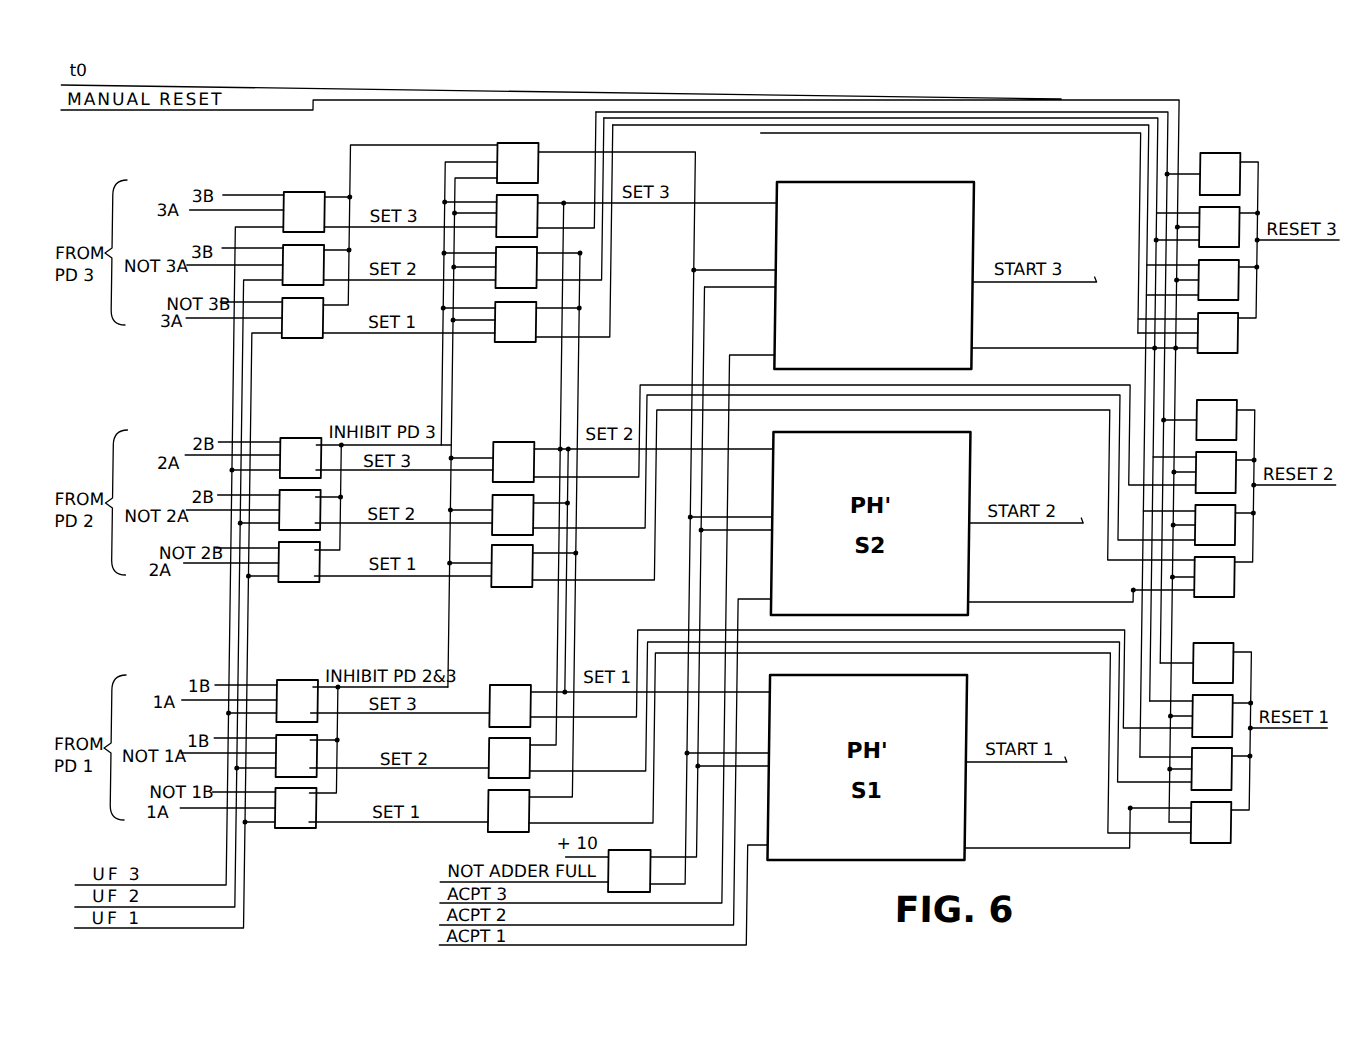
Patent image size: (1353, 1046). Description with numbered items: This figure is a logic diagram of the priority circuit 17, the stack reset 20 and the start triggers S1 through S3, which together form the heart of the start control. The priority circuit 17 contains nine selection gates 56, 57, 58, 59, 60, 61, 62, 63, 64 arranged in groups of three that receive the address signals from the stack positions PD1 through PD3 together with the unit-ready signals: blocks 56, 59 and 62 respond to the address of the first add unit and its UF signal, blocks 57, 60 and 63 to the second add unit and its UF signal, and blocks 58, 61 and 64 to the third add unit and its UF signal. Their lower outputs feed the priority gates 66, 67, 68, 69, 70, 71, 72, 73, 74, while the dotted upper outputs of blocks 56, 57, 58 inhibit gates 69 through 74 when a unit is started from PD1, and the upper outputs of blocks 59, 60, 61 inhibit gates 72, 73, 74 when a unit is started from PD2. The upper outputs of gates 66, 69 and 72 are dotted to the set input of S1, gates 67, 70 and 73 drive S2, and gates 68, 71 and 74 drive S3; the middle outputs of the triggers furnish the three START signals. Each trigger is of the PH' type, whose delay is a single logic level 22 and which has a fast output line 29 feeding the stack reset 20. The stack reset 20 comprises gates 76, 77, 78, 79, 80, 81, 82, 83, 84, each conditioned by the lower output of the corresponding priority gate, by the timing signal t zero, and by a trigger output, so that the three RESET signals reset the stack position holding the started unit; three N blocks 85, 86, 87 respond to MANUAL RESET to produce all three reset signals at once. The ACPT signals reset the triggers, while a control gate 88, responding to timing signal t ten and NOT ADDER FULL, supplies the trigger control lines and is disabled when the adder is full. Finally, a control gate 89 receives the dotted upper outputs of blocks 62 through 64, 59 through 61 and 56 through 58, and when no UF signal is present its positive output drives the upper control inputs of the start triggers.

The priority circuit 17 is at (377, 860).
The stack reset 20 is at (1223, 860).
The logic level 22 is at (888, 185).
The line 29 is at (1035, 350).
The selection gate 56 is at (305, 828).
The selection gate 57 is at (317, 740).
The selection gate 58 is at (300, 680).
The selection gate 59 is at (310, 582).
The selection gate 60 is at (320, 492).
The selection gate 61 is at (305, 438).
The selection gate 62 is at (310, 338).
The selection gate 63 is at (285, 250).
The selection gate 64 is at (320, 193).
The priority gate 66 is at (497, 797).
The priority gate 67 is at (497, 745).
The priority gate 68 is at (503, 685).
The priority gate 69 is at (525, 587).
The priority gate 70 is at (497, 500).
The priority gate 71 is at (510, 442).
The priority gate 72 is at (525, 342).
The priority gate 73 is at (537, 252).
The priority gate 74 is at (537, 200).
The reset gate 76 is at (1230, 825).
The reset gate 77 is at (1232, 772).
The reset gate 78 is at (1232, 700).
The reset gate 79 is at (1235, 587).
The reset gate 80 is at (1235, 530).
The reset gate 81 is at (1237, 455).
The reset gate 82 is at (1238, 338).
The reset gate 83 is at (1237, 283).
The reset gate 84 is at (1243, 205).
The N gate 85 is at (1233, 645).
The N gate 86 is at (1237, 430).
The N gate 87 is at (1240, 157).
The control gate 88 is at (650, 852).
The control gate 89 is at (538, 147).